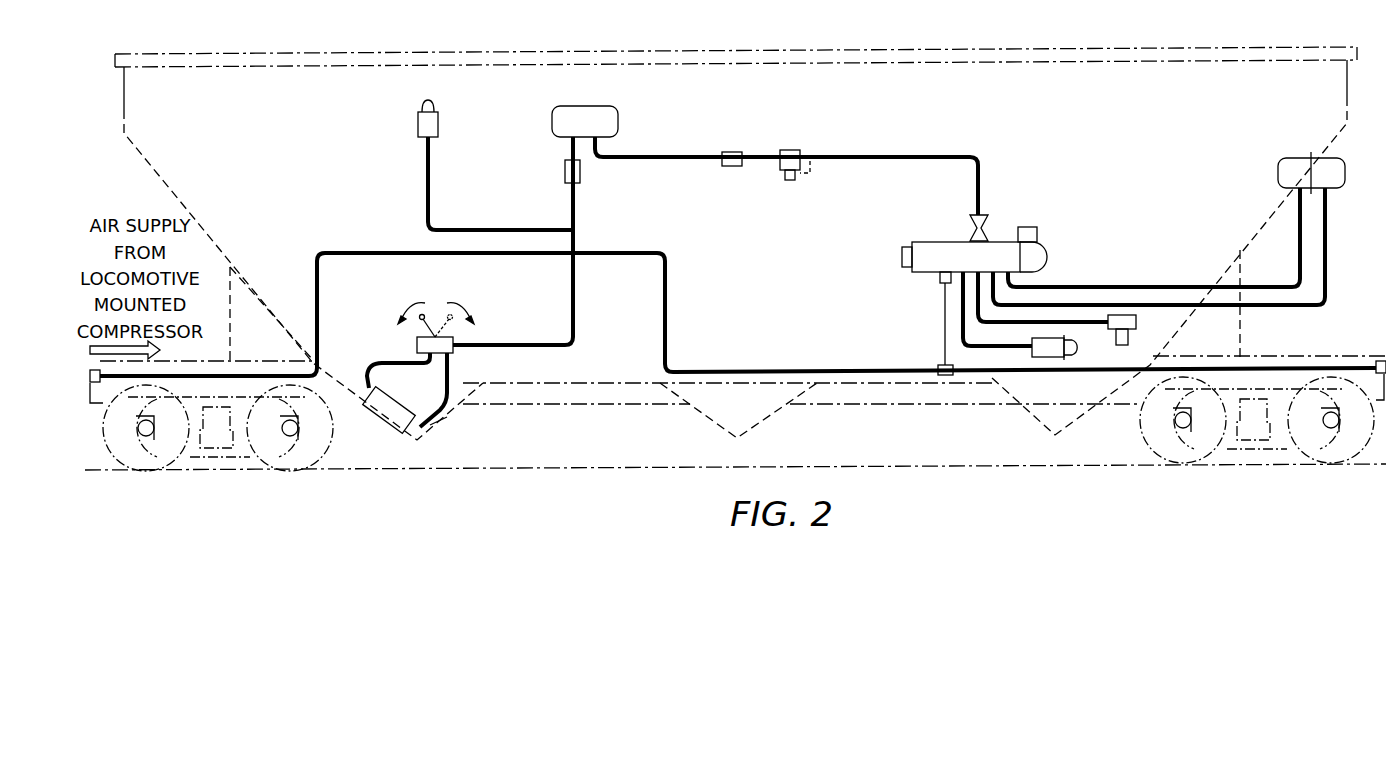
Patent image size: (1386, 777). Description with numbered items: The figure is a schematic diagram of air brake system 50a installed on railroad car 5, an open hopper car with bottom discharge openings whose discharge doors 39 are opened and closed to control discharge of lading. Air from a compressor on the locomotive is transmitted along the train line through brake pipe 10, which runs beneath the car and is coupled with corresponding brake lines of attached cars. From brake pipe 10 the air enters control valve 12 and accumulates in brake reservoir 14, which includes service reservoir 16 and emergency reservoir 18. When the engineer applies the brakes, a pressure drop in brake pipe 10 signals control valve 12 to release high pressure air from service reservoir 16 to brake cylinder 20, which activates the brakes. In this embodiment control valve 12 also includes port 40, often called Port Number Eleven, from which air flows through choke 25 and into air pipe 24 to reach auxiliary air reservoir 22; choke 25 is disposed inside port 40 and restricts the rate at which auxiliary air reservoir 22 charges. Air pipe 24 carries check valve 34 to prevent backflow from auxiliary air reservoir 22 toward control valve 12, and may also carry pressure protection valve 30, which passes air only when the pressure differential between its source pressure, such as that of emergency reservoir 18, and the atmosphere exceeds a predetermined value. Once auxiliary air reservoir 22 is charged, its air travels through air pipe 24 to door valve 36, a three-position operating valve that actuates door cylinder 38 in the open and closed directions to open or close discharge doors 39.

The railroad car 5 is at (385, 53).
The brake pipe 10 is at (1080, 372).
The control valve 12 is at (1038, 232).
The brake reservoir 14 is at (1329, 166).
The service reservoir 16 is at (1335, 178).
The emergency reservoir 18 is at (1297, 165).
The brake cylinder 20 is at (1050, 358).
The auxiliary air reservoir 22 is at (551, 122).
The air pipe 24 is at (690, 157).
The choke 25 is at (971, 228).
The pressure protection valve 30 is at (793, 150).
The check valve 34 is at (565, 170).
The door valve 36 is at (417, 345).
The door cylinder 38 is at (383, 423).
The discharge doors 39 is at (447, 417).
The port 40 is at (990, 240).
The air brake system 50a is at (990, 129).